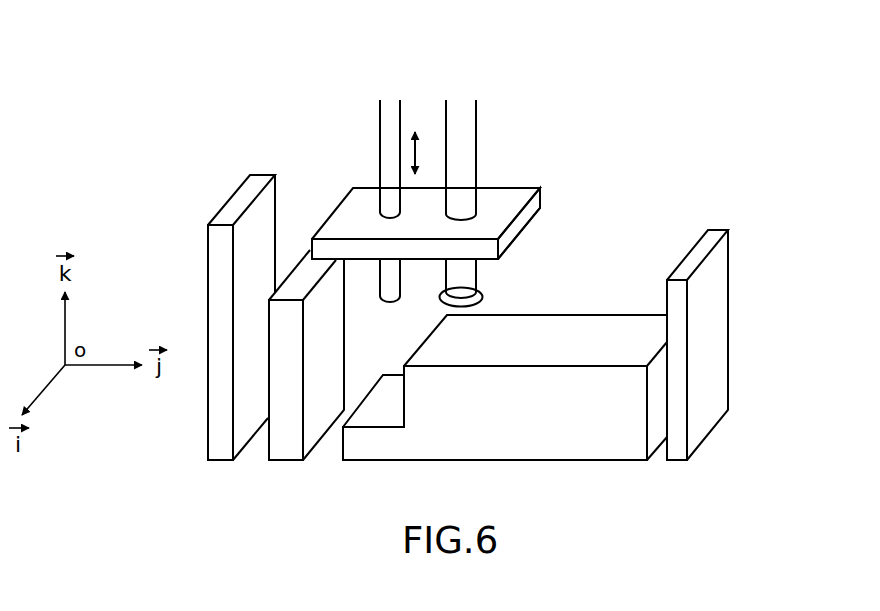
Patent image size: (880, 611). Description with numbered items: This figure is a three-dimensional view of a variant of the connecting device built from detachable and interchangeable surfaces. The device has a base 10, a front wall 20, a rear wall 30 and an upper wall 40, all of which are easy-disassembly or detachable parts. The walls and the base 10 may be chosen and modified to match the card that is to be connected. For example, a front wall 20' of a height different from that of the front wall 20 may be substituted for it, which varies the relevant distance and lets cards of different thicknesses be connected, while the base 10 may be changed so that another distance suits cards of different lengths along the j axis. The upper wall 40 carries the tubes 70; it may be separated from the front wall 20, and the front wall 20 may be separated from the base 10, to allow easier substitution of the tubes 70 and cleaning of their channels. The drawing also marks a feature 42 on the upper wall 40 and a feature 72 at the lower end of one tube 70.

The base 10 is at (569, 445).
The front wall 20 is at (306, 392).
The front wall of different height 20' is at (243, 355).
The rear wall 30 is at (705, 331).
The upper wall 40 is at (505, 198).
The edge of upper plate 42 is at (532, 237).
The tubes 70 is at (460, 92).
The pin flange / head 72 is at (491, 305).